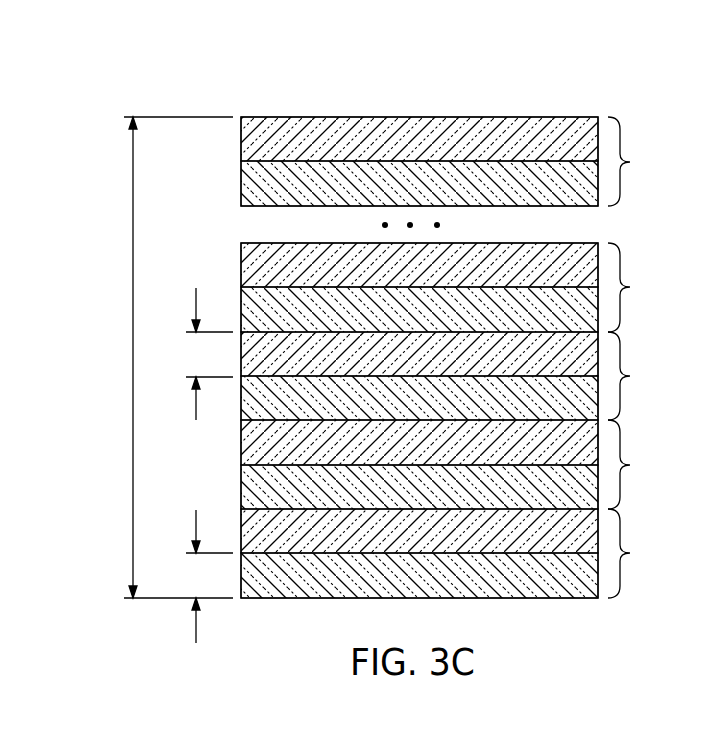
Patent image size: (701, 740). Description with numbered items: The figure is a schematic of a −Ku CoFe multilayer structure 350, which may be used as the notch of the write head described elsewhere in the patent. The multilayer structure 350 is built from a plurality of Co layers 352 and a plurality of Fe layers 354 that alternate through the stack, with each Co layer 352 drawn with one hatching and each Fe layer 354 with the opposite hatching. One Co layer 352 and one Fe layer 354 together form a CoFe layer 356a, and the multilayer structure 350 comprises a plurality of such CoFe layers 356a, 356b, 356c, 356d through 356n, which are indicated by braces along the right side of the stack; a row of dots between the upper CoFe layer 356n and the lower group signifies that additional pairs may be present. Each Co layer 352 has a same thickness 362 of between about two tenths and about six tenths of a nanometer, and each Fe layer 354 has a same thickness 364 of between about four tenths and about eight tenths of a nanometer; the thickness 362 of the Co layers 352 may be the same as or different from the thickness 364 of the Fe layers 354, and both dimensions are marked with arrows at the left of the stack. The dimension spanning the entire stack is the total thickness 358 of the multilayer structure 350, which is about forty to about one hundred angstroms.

The −Ku CoFe multilayer structure 350 is at (526, 50).
The Co layer 352 is at (432, 195).
The Fe layer 354 is at (432, 149).
The CoFe layer 356a is at (645, 553).
The CoFe layer 356b is at (645, 464).
The CoFe layer 356c is at (644, 376).
The CoFe layer 356d is at (645, 287).
The CoFe layer 356n is at (645, 161).
The total thickness 358 is at (133, 358).
The thickness of the Co layers 362 is at (205, 576).
The thickness of the Fe layers 364 is at (206, 354).